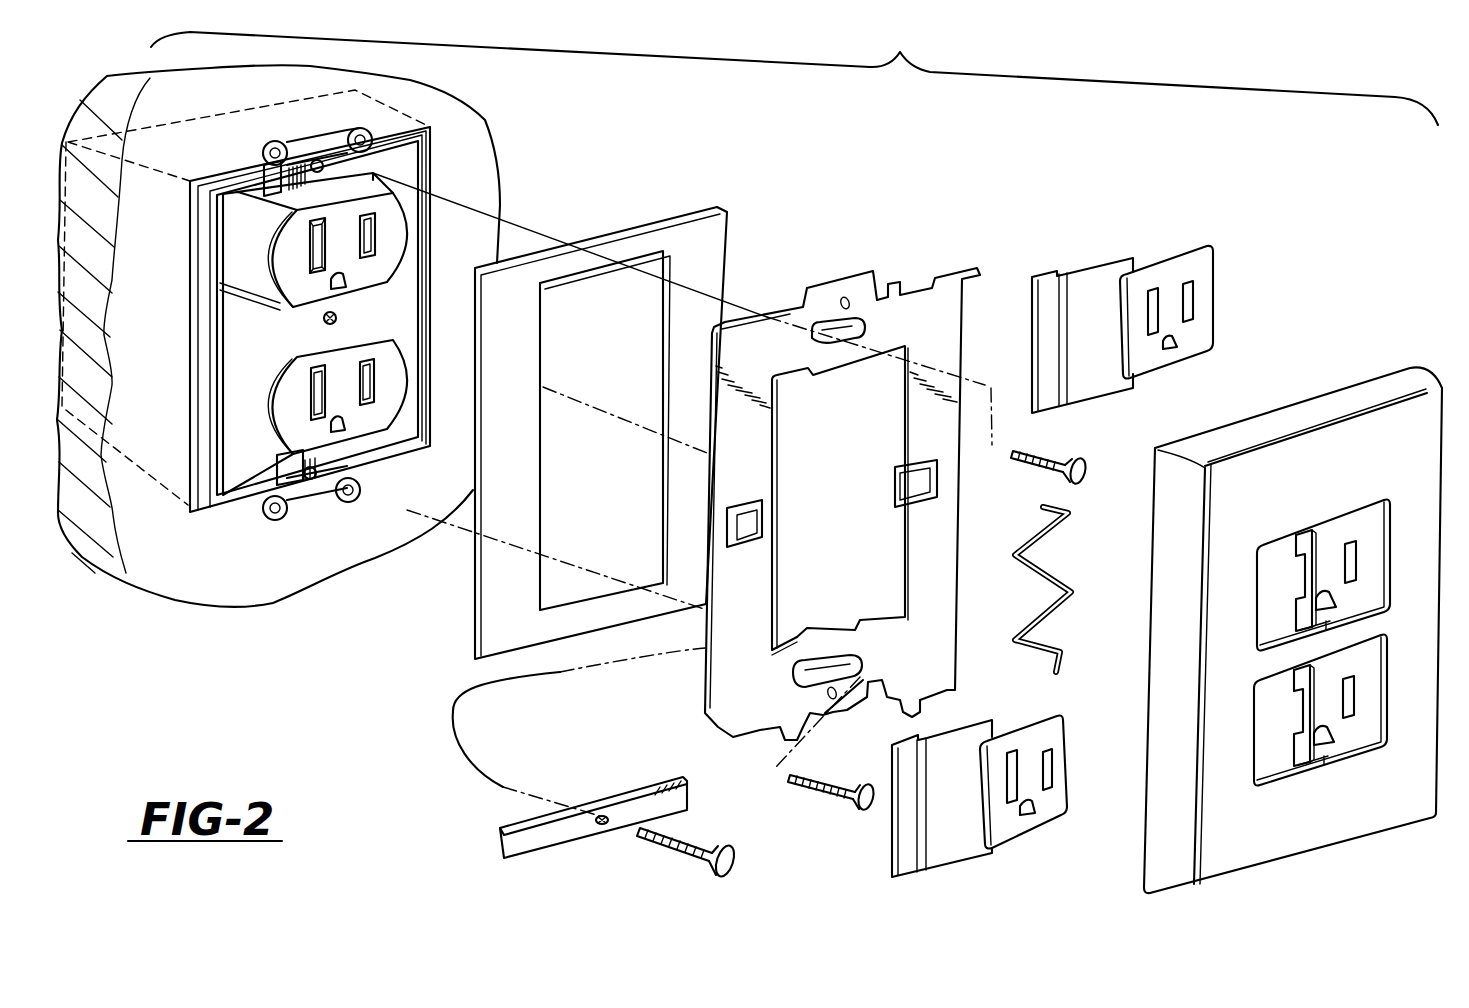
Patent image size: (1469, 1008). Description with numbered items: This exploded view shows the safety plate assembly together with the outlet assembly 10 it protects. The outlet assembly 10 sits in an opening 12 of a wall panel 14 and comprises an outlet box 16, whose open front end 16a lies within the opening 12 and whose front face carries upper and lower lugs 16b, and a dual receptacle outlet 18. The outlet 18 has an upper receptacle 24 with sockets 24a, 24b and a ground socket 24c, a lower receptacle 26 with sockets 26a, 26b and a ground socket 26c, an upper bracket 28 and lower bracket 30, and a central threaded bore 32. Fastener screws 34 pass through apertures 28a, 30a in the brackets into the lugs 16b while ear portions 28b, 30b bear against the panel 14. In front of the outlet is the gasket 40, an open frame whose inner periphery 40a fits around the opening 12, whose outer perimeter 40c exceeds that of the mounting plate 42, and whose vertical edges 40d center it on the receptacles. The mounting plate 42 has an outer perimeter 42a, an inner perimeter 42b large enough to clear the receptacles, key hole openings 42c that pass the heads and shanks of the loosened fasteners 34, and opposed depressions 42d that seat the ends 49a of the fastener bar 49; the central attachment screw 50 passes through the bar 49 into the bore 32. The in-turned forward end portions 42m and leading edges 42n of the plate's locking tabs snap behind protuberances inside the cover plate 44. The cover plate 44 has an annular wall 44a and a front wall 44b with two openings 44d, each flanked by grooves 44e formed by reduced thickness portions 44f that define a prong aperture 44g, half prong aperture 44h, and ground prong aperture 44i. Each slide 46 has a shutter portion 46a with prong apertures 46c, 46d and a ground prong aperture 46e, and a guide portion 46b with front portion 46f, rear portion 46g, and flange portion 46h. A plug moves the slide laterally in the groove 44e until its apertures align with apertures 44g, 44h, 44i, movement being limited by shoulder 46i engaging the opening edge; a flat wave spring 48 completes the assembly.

The outlet assembly 10 is at (278, 580).
The opening 12 is at (207, 350).
The wall panel 14 is at (148, 569).
The outlet box 16 is at (163, 120).
The open front end 16a is at (215, 420).
The upper and lower lugs 16b is at (300, 137).
The outlet 18 is at (257, 218).
The upper receptacle 24 is at (394, 216).
The socket 24a is at (318, 256).
The socket 24b is at (372, 240).
The ground socket 24c is at (348, 284).
The lower receptacle 26 is at (404, 408).
The socket 26a is at (312, 395).
The socket 26b is at (370, 374).
The ground socket 26c is at (370, 433).
The upper bracket 28 is at (335, 138).
The aperture 28a is at (366, 140).
The ear portion 28b is at (264, 153).
The lower bracket 30 is at (356, 500).
The aperture 30a is at (312, 490).
The ear portion 30b is at (265, 512).
The central threaded bore 32 is at (322, 318).
The fastener screws 34 is at (1030, 462).
The gasket 40 is at (598, 234).
The inner periphery 40a is at (593, 592).
The outer perimeter 40c is at (540, 248).
The gasket vertical edges 40d is at (662, 387).
The mounting plate 42 is at (880, 270).
The outer perimeter 42a is at (807, 302).
The inner perimeter 42b is at (805, 575).
The key hole openings 42c is at (835, 340).
The depressions 42d is at (762, 508).
The in-turned forward end portions 42m is at (795, 738).
The leading edges 42n is at (962, 303).
The cover plate 44 is at (1272, 605).
The annular wall 44a is at (1353, 383).
The front wall 44b is at (1415, 440).
The openings 44d is at (1278, 575).
The grooves 44e is at (1342, 522).
The reduced thickness portion 44f is at (1362, 526).
The prong aperture 44g is at (1308, 524).
The half prong aperture 44h is at (1310, 595).
The ground prong aperture 44i is at (1372, 612).
The slides 46 is at (1110, 538).
The shutter portion 46a is at (1222, 241).
The guide portion 46b is at (1093, 258).
The prong aperture 46c is at (1158, 285).
The prong aperture 46d is at (1194, 303).
The ground prong aperture 46e is at (1180, 338).
The front portion 46f is at (1093, 380).
The rear portion 46g is at (1040, 272).
The flange portion 46h is at (1057, 350).
The shoulder 46i is at (975, 768).
The spring 48 is at (1048, 606).
The fastener bar 49 is at (600, 792).
The bar ends 49a is at (500, 835).
The central attachment screw 50 is at (735, 858).